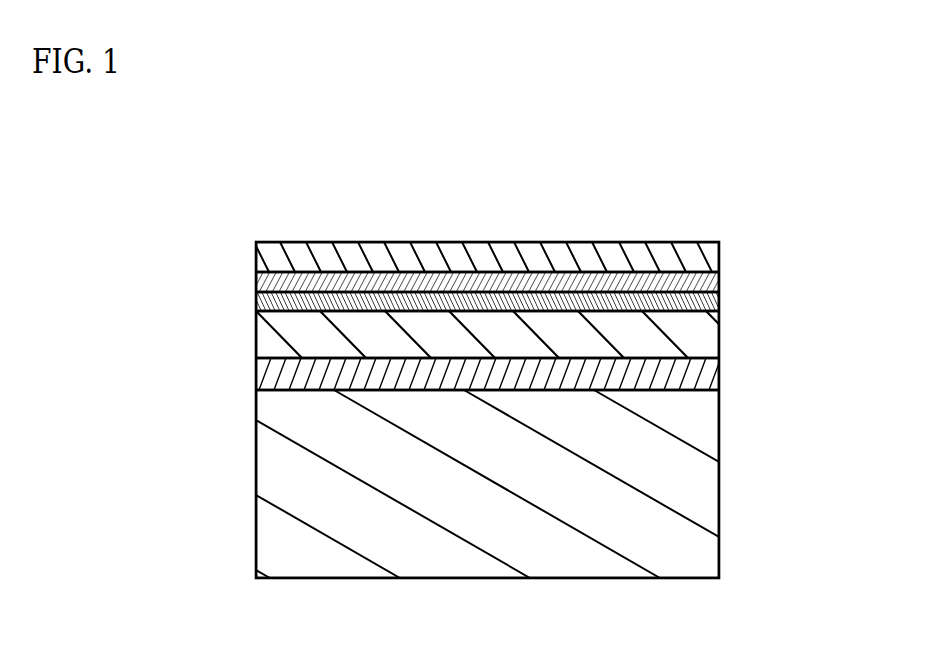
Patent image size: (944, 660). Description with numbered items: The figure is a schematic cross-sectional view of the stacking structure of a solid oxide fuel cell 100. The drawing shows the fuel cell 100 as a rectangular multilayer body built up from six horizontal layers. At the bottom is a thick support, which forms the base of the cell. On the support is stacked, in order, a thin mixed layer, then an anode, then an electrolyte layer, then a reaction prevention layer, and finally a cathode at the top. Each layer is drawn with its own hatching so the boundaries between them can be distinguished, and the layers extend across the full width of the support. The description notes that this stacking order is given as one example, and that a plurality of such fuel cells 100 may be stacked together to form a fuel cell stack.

The solid oxide fuel cell 100 is at (893, 204).